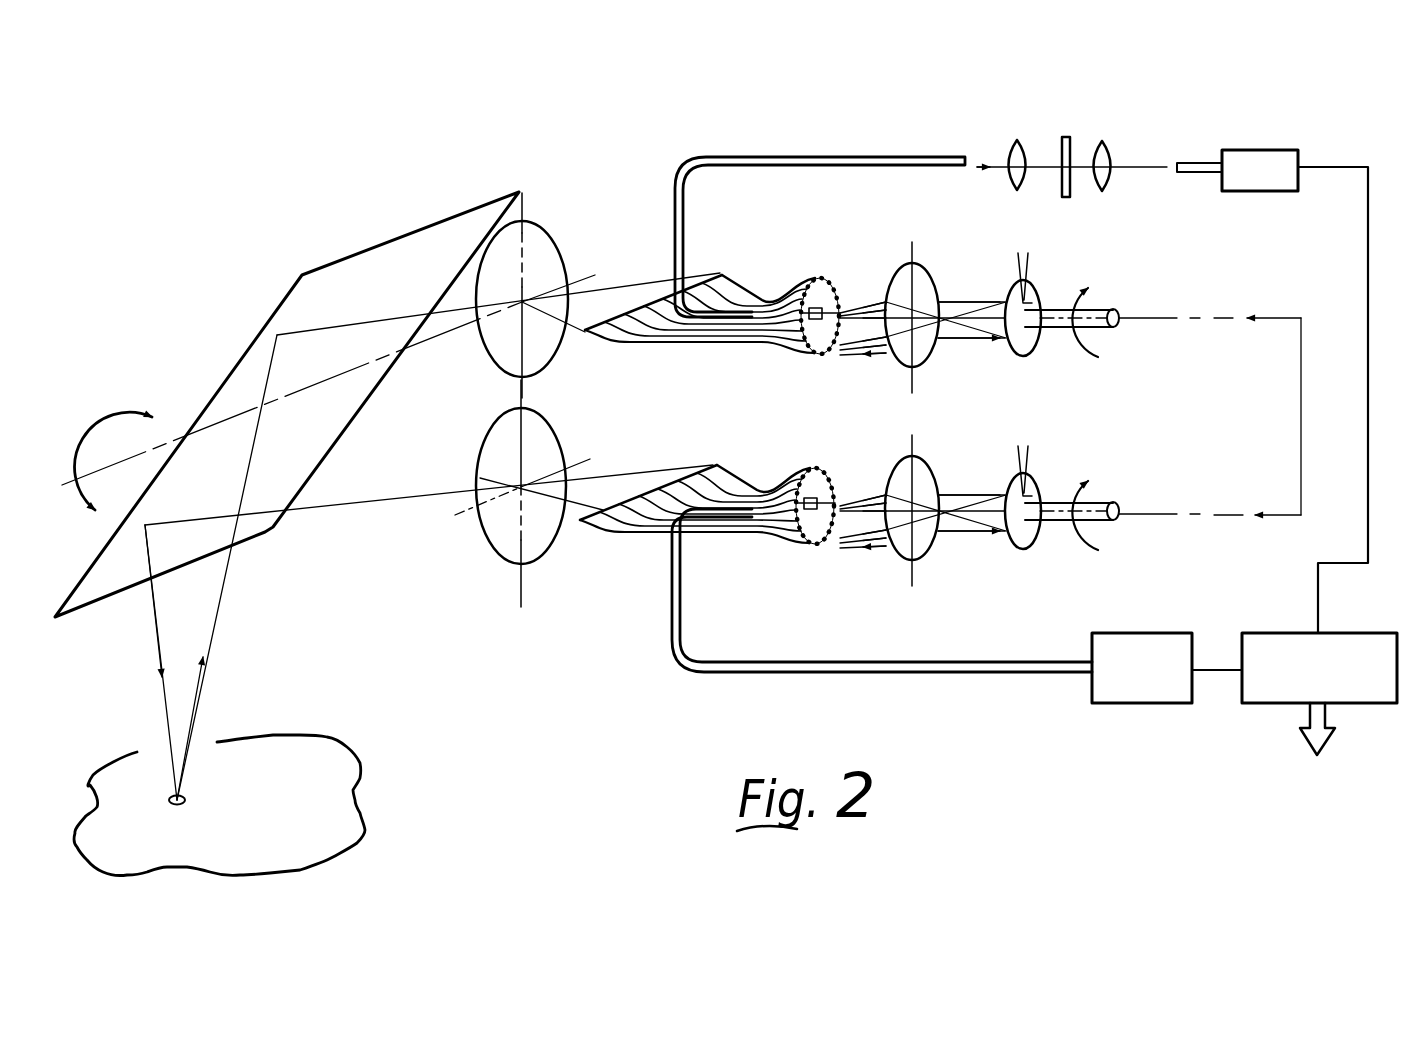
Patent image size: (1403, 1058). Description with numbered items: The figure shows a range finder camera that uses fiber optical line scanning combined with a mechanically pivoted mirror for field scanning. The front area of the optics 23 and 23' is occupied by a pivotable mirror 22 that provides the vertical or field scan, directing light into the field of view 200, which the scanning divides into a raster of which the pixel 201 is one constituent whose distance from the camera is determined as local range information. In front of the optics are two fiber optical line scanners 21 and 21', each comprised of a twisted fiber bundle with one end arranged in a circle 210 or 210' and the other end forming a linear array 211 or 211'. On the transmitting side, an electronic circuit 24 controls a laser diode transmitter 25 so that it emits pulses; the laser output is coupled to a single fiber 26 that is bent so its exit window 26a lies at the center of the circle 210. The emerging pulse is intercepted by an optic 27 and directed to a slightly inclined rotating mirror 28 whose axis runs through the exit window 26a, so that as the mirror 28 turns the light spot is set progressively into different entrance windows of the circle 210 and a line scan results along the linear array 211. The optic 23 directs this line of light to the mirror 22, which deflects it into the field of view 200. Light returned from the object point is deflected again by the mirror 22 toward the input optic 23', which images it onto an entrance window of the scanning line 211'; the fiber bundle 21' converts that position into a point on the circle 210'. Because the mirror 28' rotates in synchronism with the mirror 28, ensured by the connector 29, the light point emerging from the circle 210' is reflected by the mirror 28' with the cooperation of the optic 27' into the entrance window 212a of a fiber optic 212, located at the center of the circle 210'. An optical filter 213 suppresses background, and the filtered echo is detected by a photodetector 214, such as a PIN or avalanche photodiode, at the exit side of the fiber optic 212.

The pivotable mirror 22 is at (357, 247).
The optic 23 is at (534, 521).
The input optic 23' is at (526, 272).
The fiber optical line scanner 21 is at (740, 504).
The fiber optical line scanner 21' is at (792, 300).
The linear array 211 is at (695, 475).
The linear array 211' is at (700, 280).
The circle 210 is at (834, 504).
The circle 210' is at (890, 277).
The fiber optic 212 is at (823, 157).
The entrance window 212a is at (835, 287).
The optical filter 213 is at (1069, 132).
The photodetector 214 is at (1272, 148).
The single fiber 26 is at (918, 662).
The exit window 26a is at (830, 470).
The optic 27 is at (944, 516).
The optic 27' is at (912, 317).
The rotating mirror 28 is at (1062, 522).
The rotating mirror 28' is at (1065, 288).
The connector 29 is at (1296, 435).
The electronic circuit 24 is at (1282, 633).
The laser diode transmitter 25 is at (1172, 633).
The field of view 200 is at (337, 815).
The pixel 201 is at (185, 799).